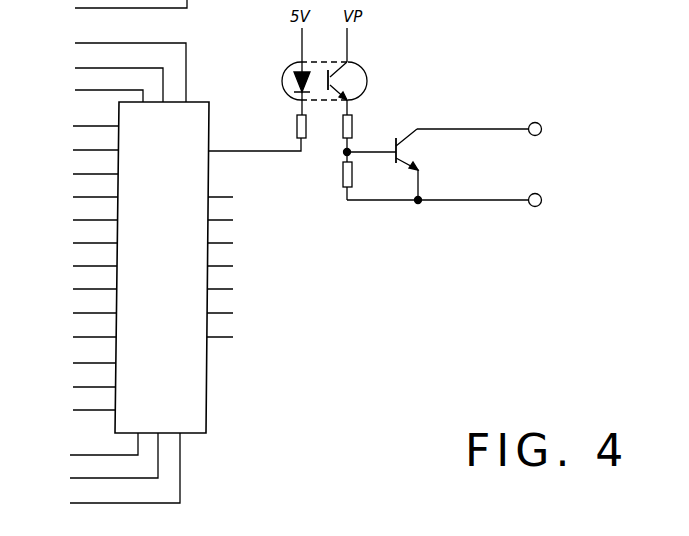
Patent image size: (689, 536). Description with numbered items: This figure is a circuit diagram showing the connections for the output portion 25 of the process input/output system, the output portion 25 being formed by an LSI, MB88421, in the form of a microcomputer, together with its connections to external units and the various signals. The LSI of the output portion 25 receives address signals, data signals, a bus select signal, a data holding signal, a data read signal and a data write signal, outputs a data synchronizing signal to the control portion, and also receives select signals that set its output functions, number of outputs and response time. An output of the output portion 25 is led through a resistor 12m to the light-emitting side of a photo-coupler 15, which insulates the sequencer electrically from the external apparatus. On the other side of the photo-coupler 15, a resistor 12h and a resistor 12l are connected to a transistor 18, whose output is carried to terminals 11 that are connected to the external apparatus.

The terminals 11 is at (541, 124).
The resistor 12h is at (353, 122).
The resistor 12l is at (343, 190).
The resistor 12m is at (297, 128).
The photo-coupler 15 is at (366, 72).
The transistor 18 is at (414, 150).
The output portion 25 is at (206, 400).